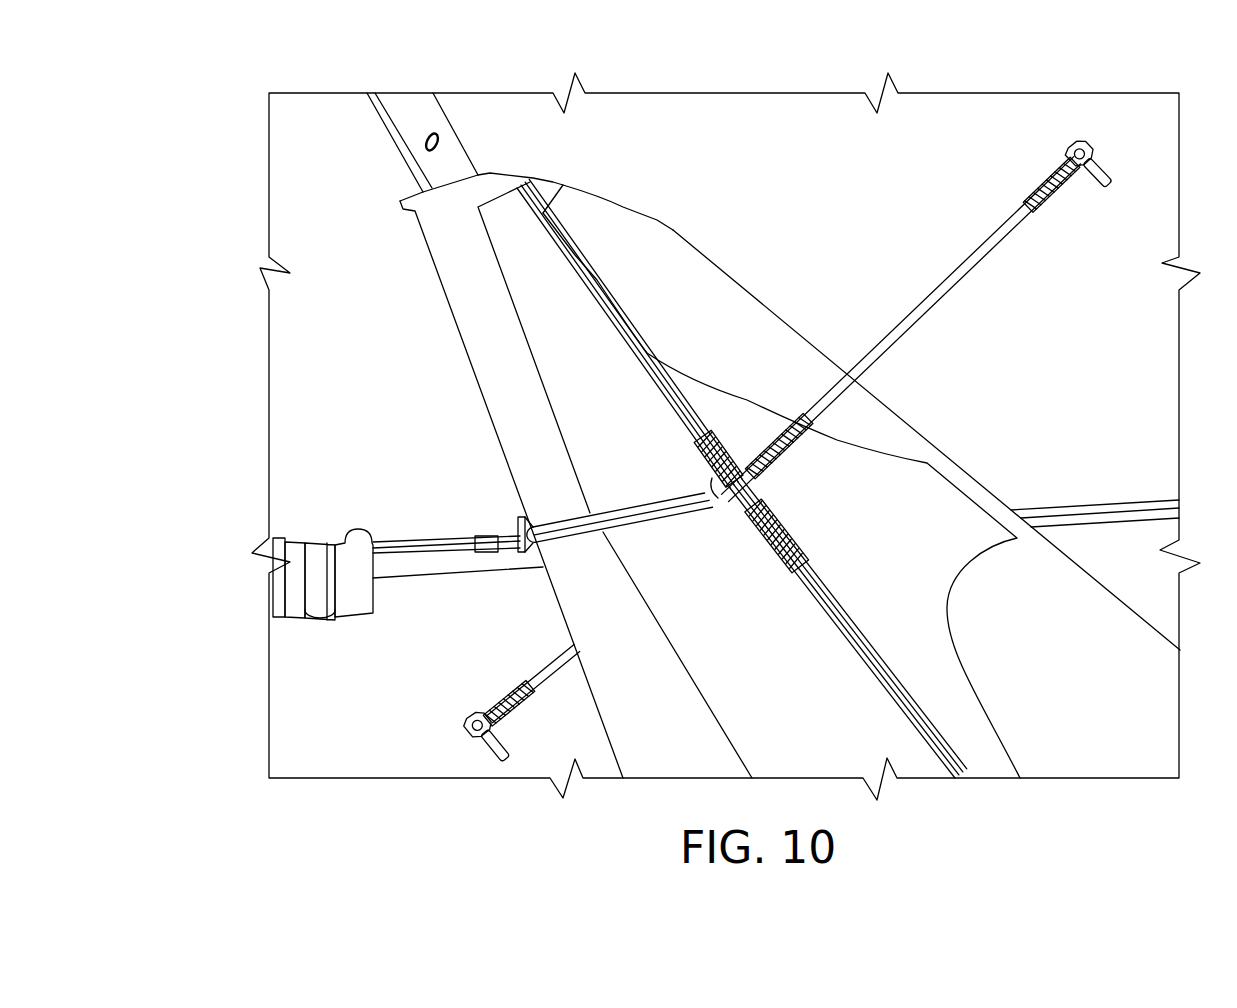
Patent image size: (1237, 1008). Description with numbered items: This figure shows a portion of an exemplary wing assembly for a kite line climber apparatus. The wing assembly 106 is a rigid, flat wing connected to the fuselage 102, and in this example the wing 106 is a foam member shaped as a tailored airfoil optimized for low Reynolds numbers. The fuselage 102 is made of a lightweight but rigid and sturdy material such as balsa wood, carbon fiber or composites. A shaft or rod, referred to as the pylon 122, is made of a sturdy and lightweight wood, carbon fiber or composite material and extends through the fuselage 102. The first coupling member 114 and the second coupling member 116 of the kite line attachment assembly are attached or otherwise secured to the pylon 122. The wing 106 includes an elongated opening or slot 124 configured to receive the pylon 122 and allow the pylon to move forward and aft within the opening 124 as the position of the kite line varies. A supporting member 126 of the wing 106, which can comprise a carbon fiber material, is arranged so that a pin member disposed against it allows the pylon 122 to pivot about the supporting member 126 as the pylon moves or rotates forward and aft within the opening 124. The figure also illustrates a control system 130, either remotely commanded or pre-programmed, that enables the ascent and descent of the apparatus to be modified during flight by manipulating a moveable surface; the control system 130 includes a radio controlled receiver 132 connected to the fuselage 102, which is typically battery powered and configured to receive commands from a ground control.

The fuselage 102 is at (463, 567).
The wing assembly 106 is at (520, 252).
The first coupling member 114 is at (443, 737).
The second coupling member 116 is at (1108, 137).
The pylon 122 is at (953, 297).
The elongated opening 124 is at (580, 515).
The supporting member 126 is at (640, 353).
The control system 130 is at (253, 550).
The radio controlled receiver 132 is at (303, 613).